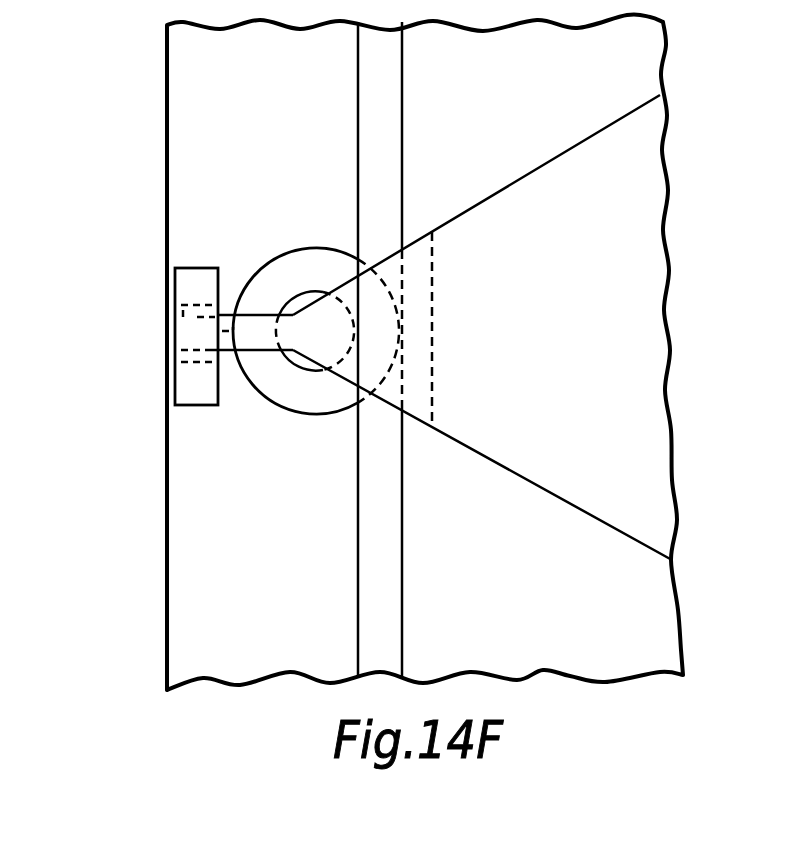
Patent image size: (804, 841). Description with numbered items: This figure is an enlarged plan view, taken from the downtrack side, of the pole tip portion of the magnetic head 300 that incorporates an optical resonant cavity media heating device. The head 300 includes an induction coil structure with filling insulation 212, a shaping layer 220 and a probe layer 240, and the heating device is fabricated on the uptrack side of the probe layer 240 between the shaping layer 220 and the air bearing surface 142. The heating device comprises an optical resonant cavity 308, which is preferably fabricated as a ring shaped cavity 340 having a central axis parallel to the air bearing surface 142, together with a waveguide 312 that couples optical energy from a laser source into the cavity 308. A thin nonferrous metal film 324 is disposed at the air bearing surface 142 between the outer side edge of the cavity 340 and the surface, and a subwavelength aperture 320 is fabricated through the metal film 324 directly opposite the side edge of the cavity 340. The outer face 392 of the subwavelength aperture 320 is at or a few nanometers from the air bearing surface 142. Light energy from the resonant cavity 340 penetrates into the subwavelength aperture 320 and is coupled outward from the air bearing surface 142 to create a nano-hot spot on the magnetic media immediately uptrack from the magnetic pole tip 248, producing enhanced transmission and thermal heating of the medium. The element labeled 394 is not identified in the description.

The magnetic head 300 is at (152, 124).
The filling insulation 212 is at (296, 108).
The waveguide 312 is at (390, 118).
The air bearing surface 142 is at (166, 205).
The ring shaped cavity 340 is at (280, 304).
The optical resonant cavity 308 is at (276, 264).
The subwavelength aperture 320 is at (167, 303).
The magnetic pole tip 248 is at (167, 323).
The outer face 392 is at (178, 336).
The metal film 324 is at (190, 378).
The hidden channel 394 is at (225, 327).
The shaping layer 220 is at (433, 317).
The probe layer 240 is at (617, 343).